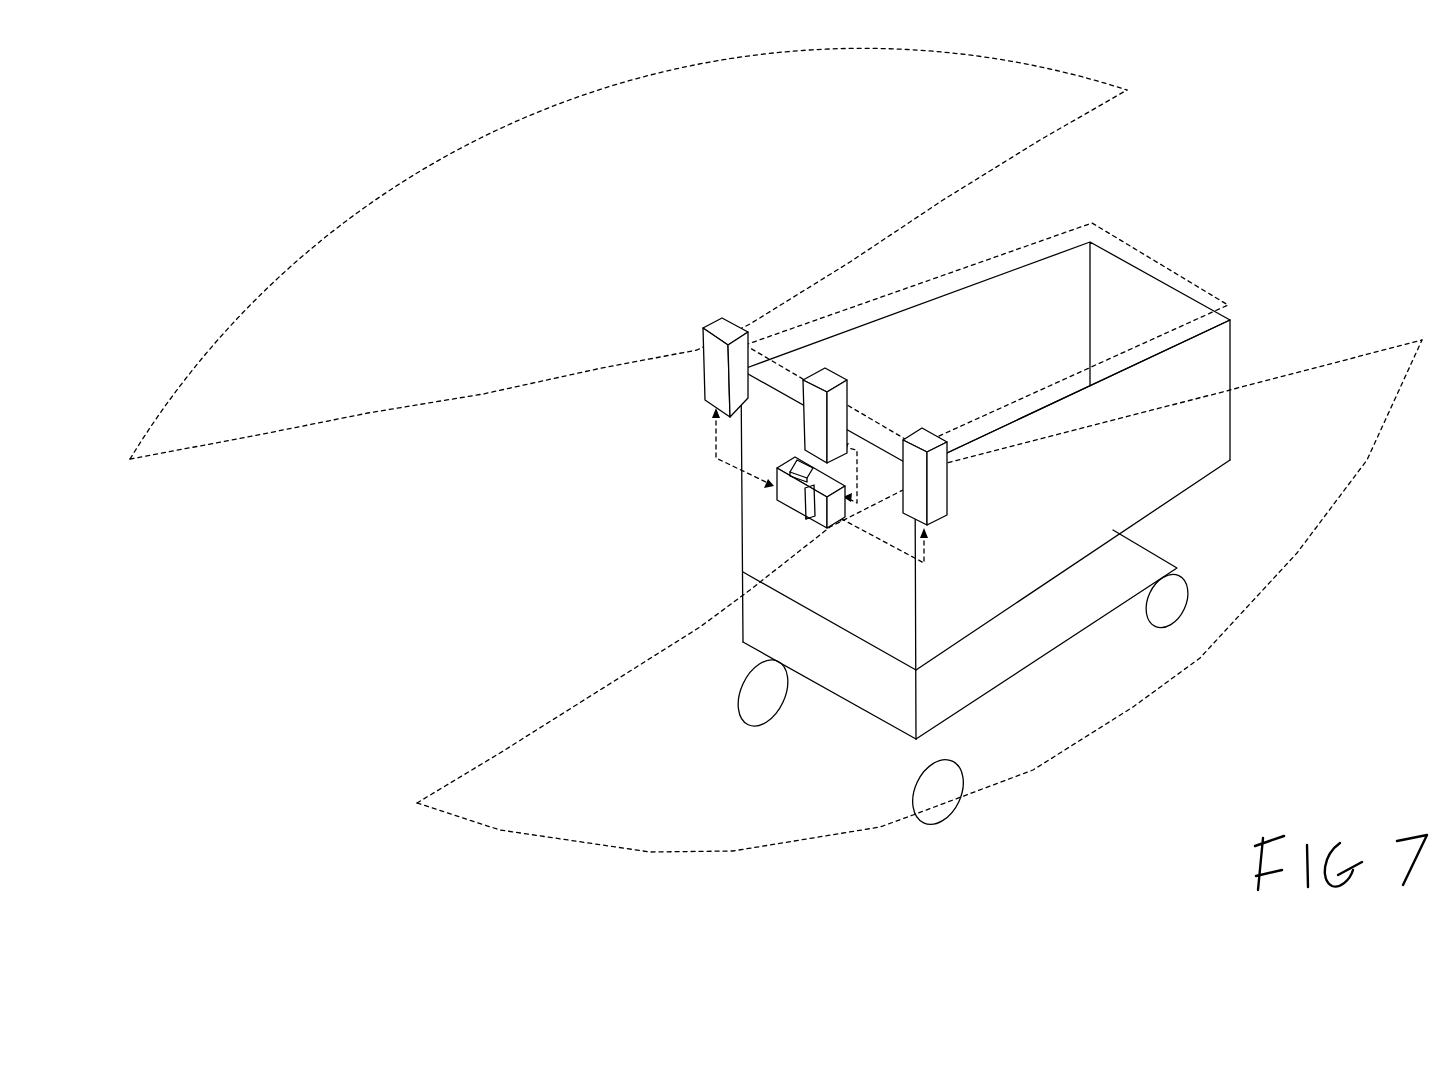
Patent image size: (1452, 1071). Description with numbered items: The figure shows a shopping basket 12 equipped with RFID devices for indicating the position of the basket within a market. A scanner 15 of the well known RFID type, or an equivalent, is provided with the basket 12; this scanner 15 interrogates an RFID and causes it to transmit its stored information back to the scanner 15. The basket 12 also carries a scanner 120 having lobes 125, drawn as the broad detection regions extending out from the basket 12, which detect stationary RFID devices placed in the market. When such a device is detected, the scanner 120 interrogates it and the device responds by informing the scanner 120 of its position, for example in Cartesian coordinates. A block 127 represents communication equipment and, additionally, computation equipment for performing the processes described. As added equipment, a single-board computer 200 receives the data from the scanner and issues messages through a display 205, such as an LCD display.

The shopping basket 12 is at (1130, 480).
The scanner 15 is at (870, 358).
The scanner 120 is at (960, 380).
The lobes 125 is at (1303, 370).
The block 127 is at (787, 505).
The single-board computer 200 is at (775, 549).
The display 205 is at (786, 466).